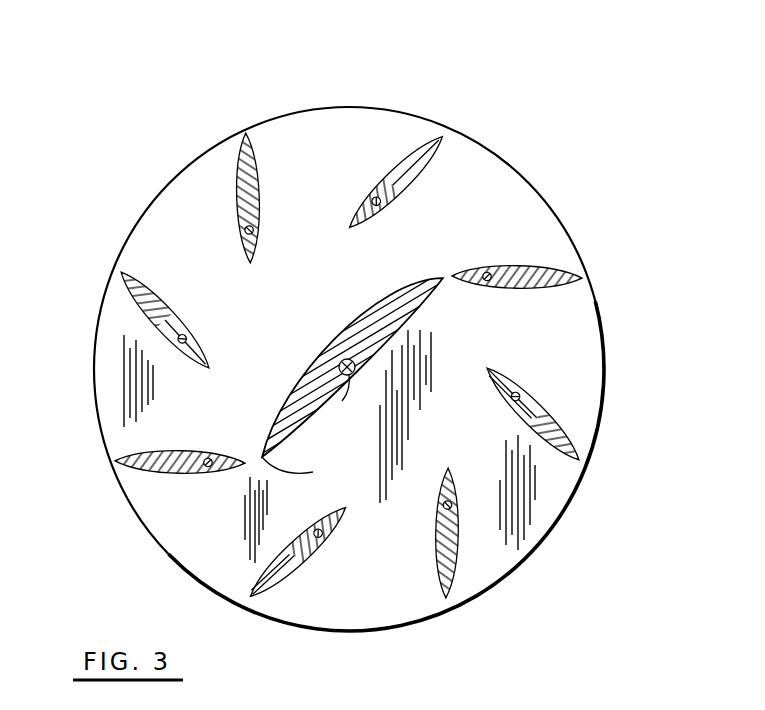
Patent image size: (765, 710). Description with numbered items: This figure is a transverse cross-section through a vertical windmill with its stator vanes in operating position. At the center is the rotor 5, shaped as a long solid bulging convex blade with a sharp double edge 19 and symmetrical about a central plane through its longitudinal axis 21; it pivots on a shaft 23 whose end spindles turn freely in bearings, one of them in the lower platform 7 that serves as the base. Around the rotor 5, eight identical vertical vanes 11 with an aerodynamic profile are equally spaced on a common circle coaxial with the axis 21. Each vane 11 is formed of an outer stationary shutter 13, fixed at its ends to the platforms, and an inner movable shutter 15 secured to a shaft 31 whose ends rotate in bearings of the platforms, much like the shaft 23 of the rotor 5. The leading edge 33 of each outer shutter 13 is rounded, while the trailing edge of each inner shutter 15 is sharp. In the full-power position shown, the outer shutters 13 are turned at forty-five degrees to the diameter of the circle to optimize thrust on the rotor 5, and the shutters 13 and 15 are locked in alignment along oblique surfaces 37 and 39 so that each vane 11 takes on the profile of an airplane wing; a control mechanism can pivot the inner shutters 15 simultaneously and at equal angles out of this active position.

The rotor 5 is at (347, 360).
The lower platform 7 is at (509, 216).
The vertical vanes 11 is at (264, 146).
The outer stationary shutter 13 is at (407, 155).
The inner movable shutter 15 is at (372, 190).
The sharp double edge 19 is at (297, 463).
The longitudinal axis 21 is at (341, 360).
The shaft 23 is at (343, 404).
The shafts 31 is at (362, 205).
The leading edge 33 is at (397, 376).
The oblique surface 37 is at (238, 228).
The oblique surface 39 is at (355, 376).